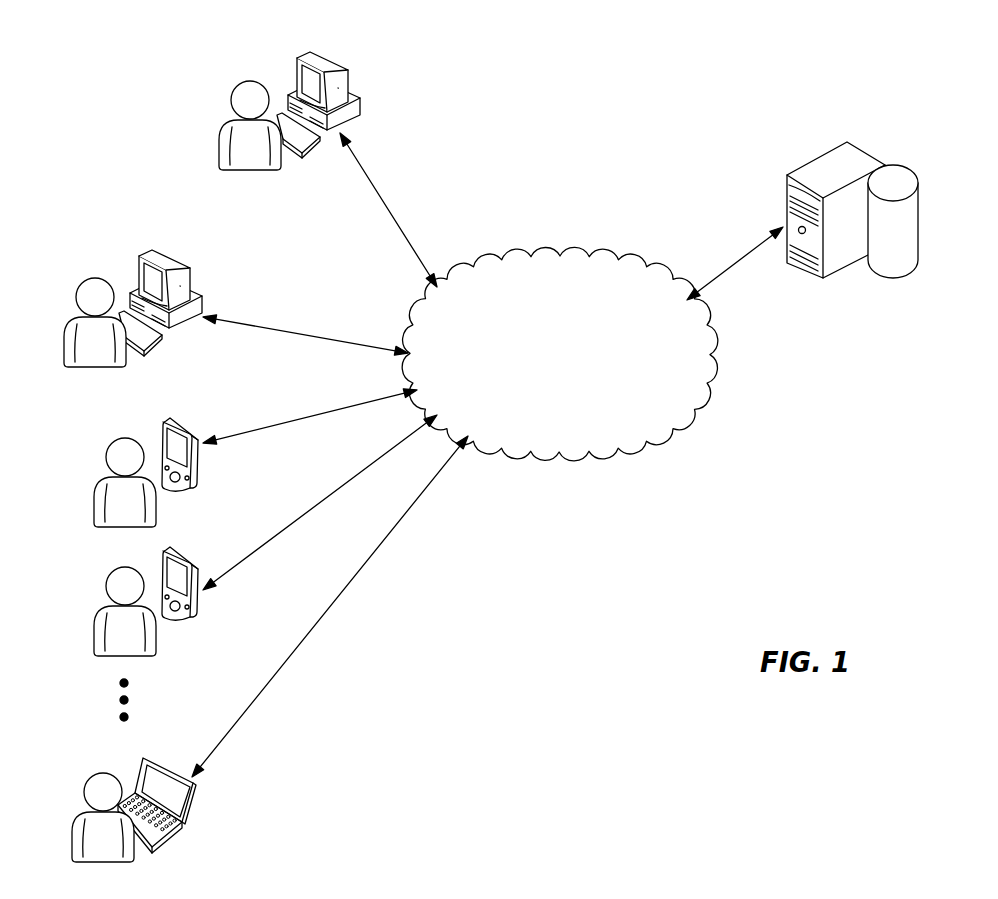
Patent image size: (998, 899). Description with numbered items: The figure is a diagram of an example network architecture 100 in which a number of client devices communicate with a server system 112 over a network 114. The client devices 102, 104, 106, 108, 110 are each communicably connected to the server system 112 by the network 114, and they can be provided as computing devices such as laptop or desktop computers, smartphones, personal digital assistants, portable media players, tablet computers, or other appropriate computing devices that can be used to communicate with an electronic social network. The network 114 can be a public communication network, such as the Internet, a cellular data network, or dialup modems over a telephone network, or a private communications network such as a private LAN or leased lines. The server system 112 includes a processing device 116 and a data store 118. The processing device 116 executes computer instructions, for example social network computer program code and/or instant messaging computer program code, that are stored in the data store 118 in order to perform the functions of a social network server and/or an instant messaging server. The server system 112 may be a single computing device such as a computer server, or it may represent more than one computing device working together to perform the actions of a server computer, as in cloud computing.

The network architecture 100 is at (667, 118).
The client device 102 is at (343, 57).
The client device 104 is at (178, 257).
The client device 106 is at (194, 421).
The client device 108 is at (194, 551).
The client device 110 is at (160, 760).
The server system 112 is at (793, 285).
The network 114 is at (543, 254).
The processing device 116 is at (870, 148).
The data store 118 is at (921, 219).